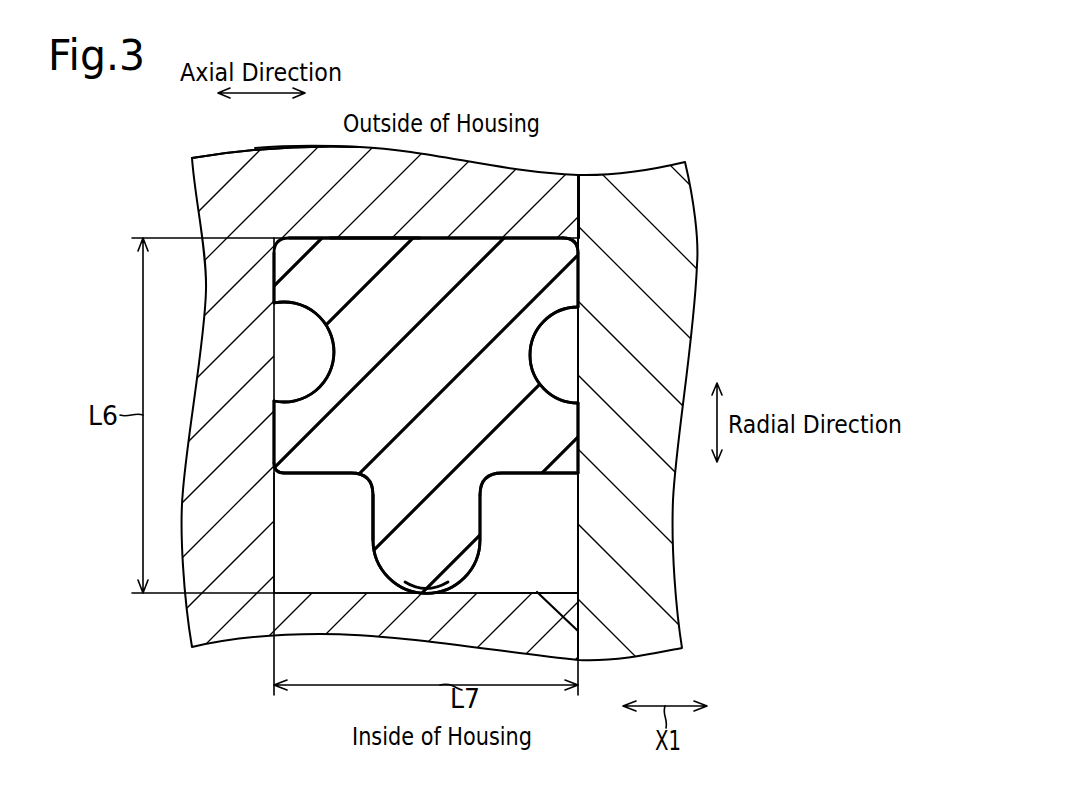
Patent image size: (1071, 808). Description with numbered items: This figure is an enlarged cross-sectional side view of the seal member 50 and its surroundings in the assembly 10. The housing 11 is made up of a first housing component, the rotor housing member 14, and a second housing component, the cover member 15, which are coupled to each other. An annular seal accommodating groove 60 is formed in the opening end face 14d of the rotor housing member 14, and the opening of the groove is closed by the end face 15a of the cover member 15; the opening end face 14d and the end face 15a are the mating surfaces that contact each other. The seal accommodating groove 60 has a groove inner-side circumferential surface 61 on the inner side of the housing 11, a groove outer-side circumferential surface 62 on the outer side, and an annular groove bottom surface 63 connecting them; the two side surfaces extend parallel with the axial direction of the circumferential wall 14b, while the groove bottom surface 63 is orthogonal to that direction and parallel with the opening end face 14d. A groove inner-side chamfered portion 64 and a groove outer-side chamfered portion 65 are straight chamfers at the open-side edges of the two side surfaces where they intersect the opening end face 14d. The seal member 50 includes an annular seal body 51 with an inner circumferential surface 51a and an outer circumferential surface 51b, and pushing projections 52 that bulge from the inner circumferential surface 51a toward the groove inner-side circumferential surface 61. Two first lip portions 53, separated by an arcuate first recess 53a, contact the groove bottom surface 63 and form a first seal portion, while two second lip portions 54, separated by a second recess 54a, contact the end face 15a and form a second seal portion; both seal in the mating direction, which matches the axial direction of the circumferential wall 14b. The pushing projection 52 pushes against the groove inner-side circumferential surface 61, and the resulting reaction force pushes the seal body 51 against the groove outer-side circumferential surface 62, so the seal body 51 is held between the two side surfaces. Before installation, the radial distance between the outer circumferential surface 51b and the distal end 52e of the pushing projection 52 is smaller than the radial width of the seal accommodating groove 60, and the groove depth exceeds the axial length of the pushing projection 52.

The sealing structure 10 is at (752, 163).
The housing 11 is at (205, 157).
The rotor housing member 14 is at (223, 163).
The circumferential wall 14b is at (280, 160).
The opening end face 14d is at (582, 183).
The cover member 15 is at (645, 181).
The end face 15a is at (573, 197).
The seal member 50 is at (312, 238).
The seal body 51 is at (318, 455).
The inner circumferential surface 51a is at (520, 478).
The outer circumferential surface 51b is at (440, 237).
The pushing projection 52 is at (465, 508).
The distal end 52e is at (425, 597).
The first lip portion 53 is at (273, 280).
The first recess 53a is at (307, 323).
The second lip portion 54 is at (580, 285).
The second recess 54a is at (538, 340).
The seal accommodating groove 60 is at (498, 592).
The groove inner-side circumferential surface 61 is at (365, 583).
The groove outer-side circumferential surface 62 is at (373, 243).
The groove bottom surface 63 is at (280, 498).
The groove inner-side chamfered portion 64 is at (558, 610).
The groove outer-side chamfered portion 65 is at (572, 215).